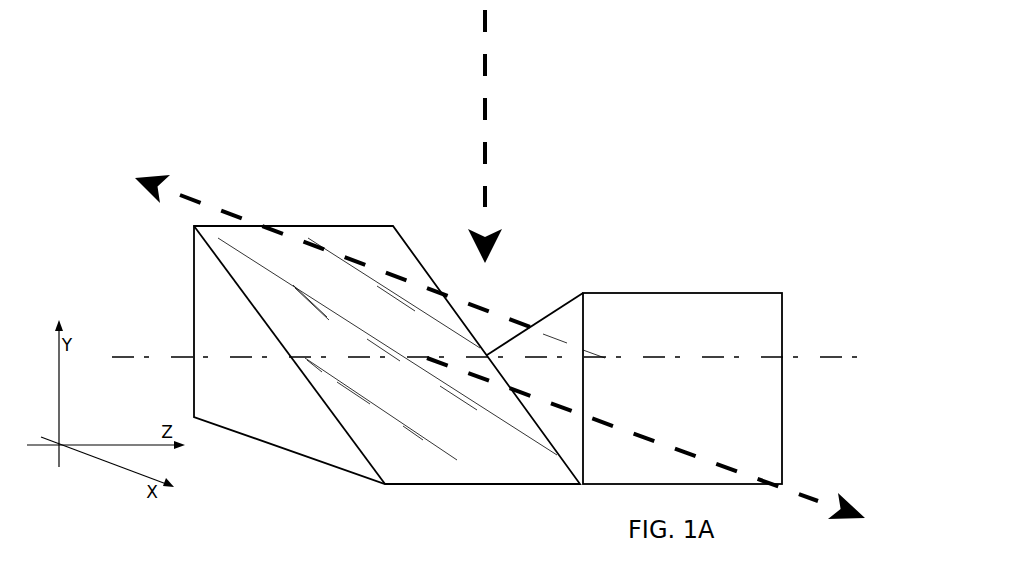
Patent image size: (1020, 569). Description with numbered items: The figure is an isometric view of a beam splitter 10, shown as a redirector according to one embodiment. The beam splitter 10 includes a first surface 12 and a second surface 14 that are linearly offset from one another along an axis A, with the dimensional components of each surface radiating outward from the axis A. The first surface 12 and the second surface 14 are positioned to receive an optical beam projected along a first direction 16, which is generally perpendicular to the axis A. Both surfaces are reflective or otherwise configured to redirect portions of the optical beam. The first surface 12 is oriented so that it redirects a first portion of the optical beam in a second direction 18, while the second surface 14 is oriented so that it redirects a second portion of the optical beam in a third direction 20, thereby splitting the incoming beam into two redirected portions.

The beam splitter 10 is at (488, 306).
The first surface 12 is at (370, 240).
The second surface 14 is at (555, 308).
The first direction 16 is at (487, 68).
The second direction 18 is at (728, 462).
The third direction 20 is at (190, 200).
The axis A is at (812, 352).